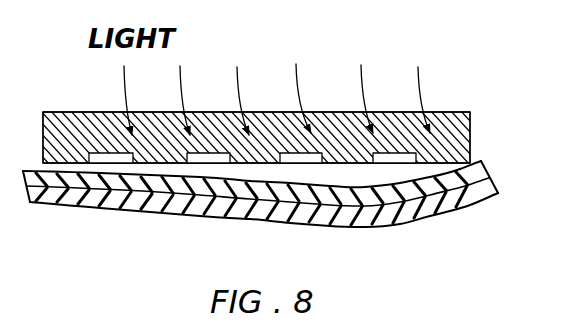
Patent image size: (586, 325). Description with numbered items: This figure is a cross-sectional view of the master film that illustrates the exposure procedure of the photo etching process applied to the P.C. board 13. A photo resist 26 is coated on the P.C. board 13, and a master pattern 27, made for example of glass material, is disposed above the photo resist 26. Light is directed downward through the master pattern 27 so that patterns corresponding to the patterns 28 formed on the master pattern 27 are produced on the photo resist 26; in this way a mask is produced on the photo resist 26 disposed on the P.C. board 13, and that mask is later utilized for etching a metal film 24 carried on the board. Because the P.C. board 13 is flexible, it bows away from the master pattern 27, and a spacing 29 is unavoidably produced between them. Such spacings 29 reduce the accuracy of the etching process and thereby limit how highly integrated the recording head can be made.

The P.C. board 13 is at (482, 197).
The metal film 24 is at (487, 177).
The photo resist 26 is at (483, 162).
The master pattern 27 is at (457, 131).
The patterns 28 is at (314, 162).
The spacing 29 is at (266, 175).